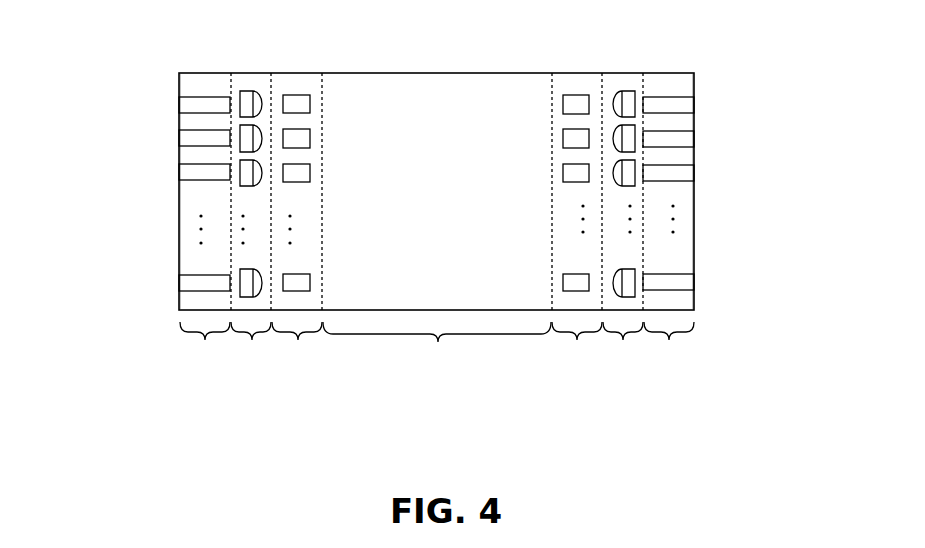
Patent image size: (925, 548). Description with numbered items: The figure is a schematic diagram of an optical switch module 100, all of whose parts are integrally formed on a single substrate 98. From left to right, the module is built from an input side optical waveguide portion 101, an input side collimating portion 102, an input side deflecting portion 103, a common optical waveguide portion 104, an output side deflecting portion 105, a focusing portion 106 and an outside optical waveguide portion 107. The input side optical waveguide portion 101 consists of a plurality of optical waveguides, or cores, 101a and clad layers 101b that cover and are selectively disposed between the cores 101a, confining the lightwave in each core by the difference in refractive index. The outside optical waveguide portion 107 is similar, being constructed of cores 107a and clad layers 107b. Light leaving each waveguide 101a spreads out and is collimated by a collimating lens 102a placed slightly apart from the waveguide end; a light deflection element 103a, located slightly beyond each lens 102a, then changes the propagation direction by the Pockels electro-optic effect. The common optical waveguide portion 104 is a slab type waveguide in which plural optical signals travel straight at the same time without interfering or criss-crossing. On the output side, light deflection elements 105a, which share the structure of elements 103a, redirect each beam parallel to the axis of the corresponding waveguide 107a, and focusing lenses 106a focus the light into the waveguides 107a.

The substrate 98 is at (430, 73).
The optical switch module 100 is at (288, 385).
The input side optical waveguide portion 101 is at (205, 344).
The optical waveguides 101a is at (179, 105).
The clad layers 101b is at (192, 87).
The input side collimating portion 102 is at (251, 344).
The collimating lenses 102a is at (247, 88).
The input side deflecting portion 103 is at (297, 344).
The light deflection elements 103a is at (290, 92).
The common optical waveguide portion 104 is at (437, 347).
The output side deflecting portion 105 is at (577, 344).
The light deflection elements 105a is at (581, 92).
The focusing portion 106 is at (623, 344).
The focusing lenses 106a is at (625, 90).
The outside optical waveguide portion 107 is at (669, 344).
The optical waveguides 107a is at (697, 103).
The clad layers 107b is at (679, 85).